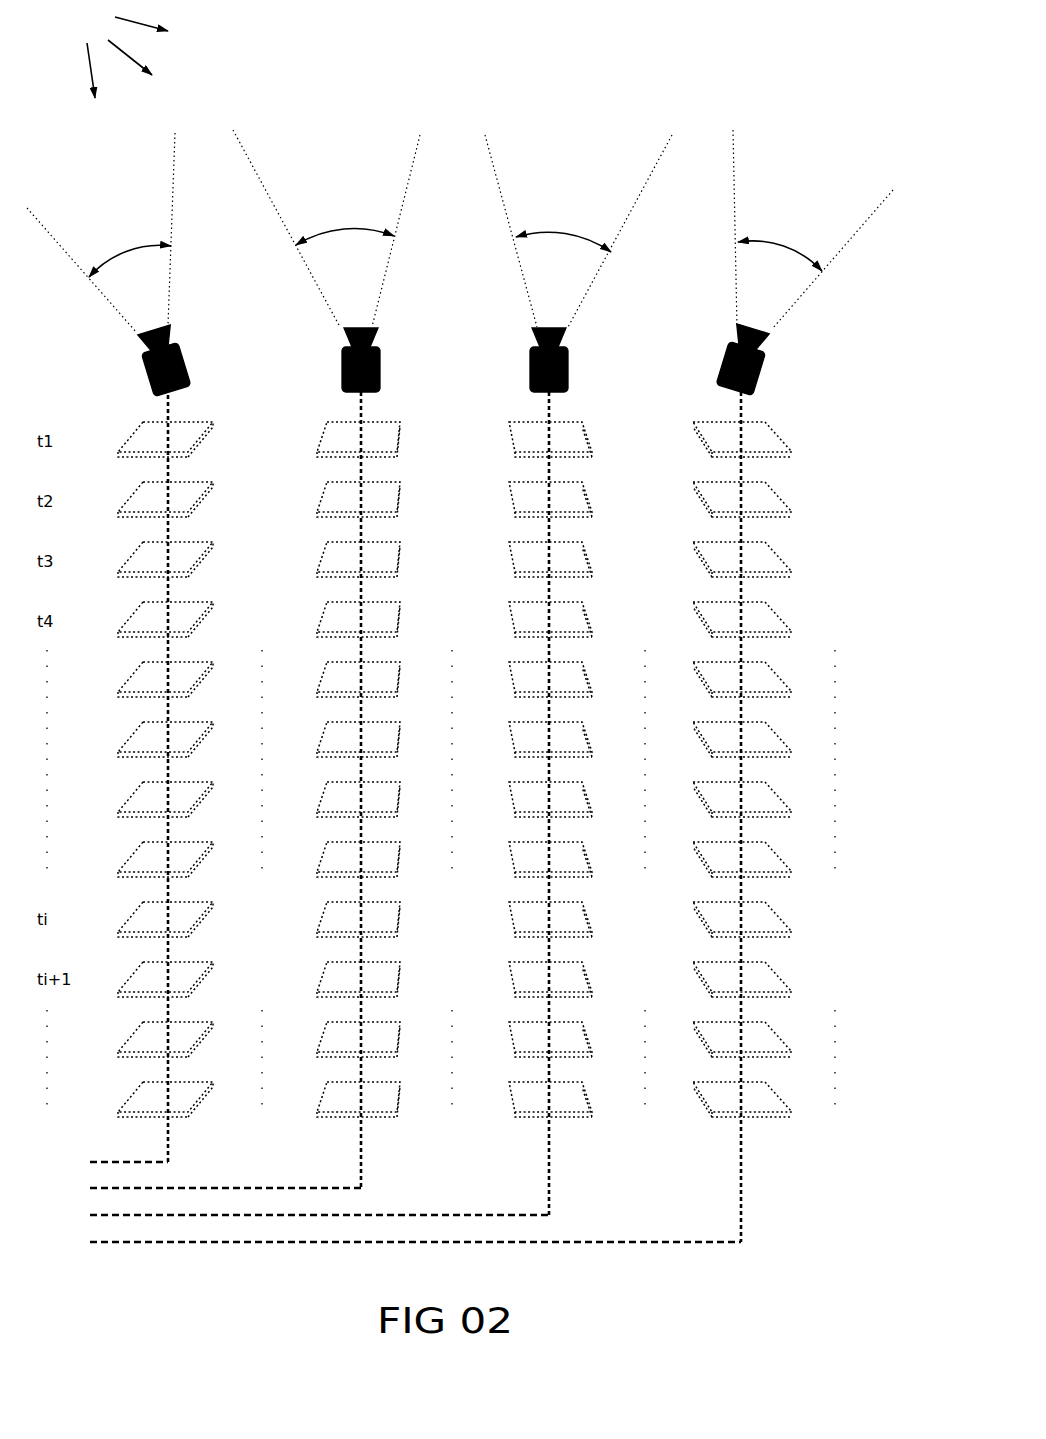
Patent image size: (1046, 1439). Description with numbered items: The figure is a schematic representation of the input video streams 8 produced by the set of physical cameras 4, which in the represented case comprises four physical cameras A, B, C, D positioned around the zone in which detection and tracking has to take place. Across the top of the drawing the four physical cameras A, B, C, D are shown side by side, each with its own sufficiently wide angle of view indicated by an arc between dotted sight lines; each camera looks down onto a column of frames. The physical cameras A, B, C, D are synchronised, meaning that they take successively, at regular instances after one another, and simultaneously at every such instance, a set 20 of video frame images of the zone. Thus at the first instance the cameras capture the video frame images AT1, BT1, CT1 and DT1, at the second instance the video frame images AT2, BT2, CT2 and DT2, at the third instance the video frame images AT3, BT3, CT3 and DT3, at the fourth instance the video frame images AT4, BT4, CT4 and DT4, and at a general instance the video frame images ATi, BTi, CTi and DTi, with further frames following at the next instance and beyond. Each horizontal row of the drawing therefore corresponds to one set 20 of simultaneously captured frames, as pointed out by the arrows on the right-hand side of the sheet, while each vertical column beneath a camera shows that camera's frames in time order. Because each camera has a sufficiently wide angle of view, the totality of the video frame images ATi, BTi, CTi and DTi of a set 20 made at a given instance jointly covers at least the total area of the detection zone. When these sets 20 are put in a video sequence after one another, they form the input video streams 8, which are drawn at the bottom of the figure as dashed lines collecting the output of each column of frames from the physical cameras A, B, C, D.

The set of physical cameras 4 is at (119, 55).
The input video streams 8 is at (122, 1162).
The set of video frame images 20 is at (806, 682).
The physical camera A is at (178, 363).
The physical camera B is at (373, 358).
The physical camera C is at (561, 358).
The physical camera D is at (752, 357).
The video frame image AT1 is at (187, 432).
The video frame image AT2 is at (187, 492).
The video frame image AT3 is at (187, 552).
The video frame image AT4 is at (187, 612).
The video frame image ATi is at (187, 912).
The video frame image BT1 is at (373, 432).
The video frame image BT2 is at (373, 492).
The video frame image BT3 is at (373, 552).
The video frame image BT4 is at (373, 612).
The video frame image BTi is at (373, 912).
The video frame image CT1 is at (570, 432).
The video frame image CT2 is at (570, 492).
The video frame image CT3 is at (570, 552).
The video frame image CT4 is at (570, 612).
The video frame image CTi is at (570, 912).
The video frame image DT1 is at (762, 432).
The video frame image DT2 is at (762, 492).
The video frame image DT3 is at (762, 552).
The video frame image DT4 is at (762, 612).
The video frame image DTi is at (762, 912).